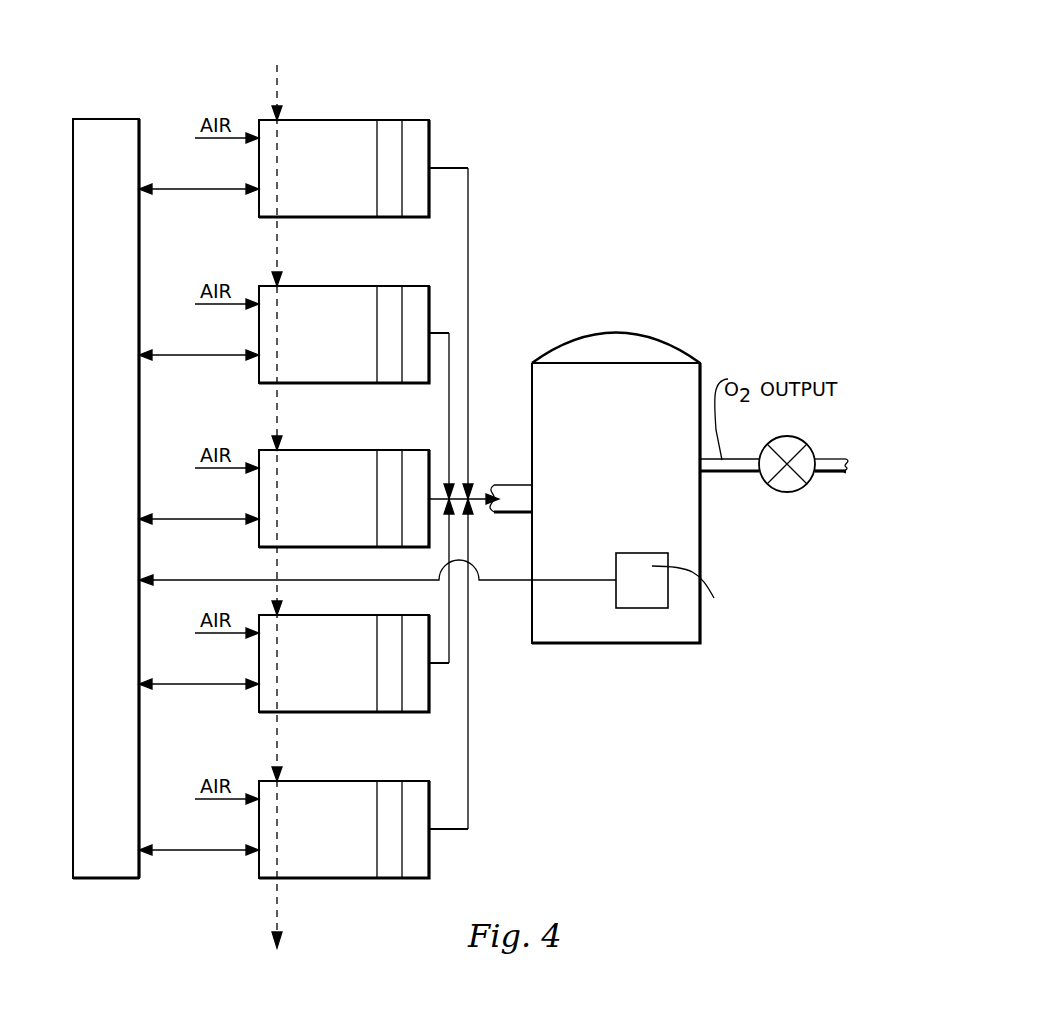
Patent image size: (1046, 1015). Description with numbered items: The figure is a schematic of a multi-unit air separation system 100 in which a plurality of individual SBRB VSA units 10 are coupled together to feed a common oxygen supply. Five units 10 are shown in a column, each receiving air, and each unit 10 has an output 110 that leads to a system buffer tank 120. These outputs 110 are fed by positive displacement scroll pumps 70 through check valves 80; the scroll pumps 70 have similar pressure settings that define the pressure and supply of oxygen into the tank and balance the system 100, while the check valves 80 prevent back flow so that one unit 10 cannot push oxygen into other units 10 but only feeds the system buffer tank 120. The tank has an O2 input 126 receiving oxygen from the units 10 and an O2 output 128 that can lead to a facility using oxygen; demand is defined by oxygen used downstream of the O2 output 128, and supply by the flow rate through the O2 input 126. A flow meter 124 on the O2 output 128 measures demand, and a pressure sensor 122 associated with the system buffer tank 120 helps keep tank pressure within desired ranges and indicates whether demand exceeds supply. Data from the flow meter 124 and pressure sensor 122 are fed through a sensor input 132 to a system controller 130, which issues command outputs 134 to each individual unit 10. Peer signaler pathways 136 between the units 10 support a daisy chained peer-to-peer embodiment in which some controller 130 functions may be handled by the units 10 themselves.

The multi-unit system 100 is at (562, 114).
The SBRB VSA unit 10 is at (302, 132).
The scroll pump 70 is at (389, 132).
The check valve 80 is at (420, 130).
The output 110 is at (468, 193).
The system buffer tank 120 is at (627, 453).
The pressure sensor 122 is at (641, 608).
The flow meter 124 is at (790, 437).
The O2 input 126 is at (516, 484).
The O2 output 128 is at (830, 472).
The system controller 130 is at (105, 858).
The sensor input 132 is at (195, 579).
The command output 134 is at (215, 190).
The peer signaler pathway 136 is at (277, 92).